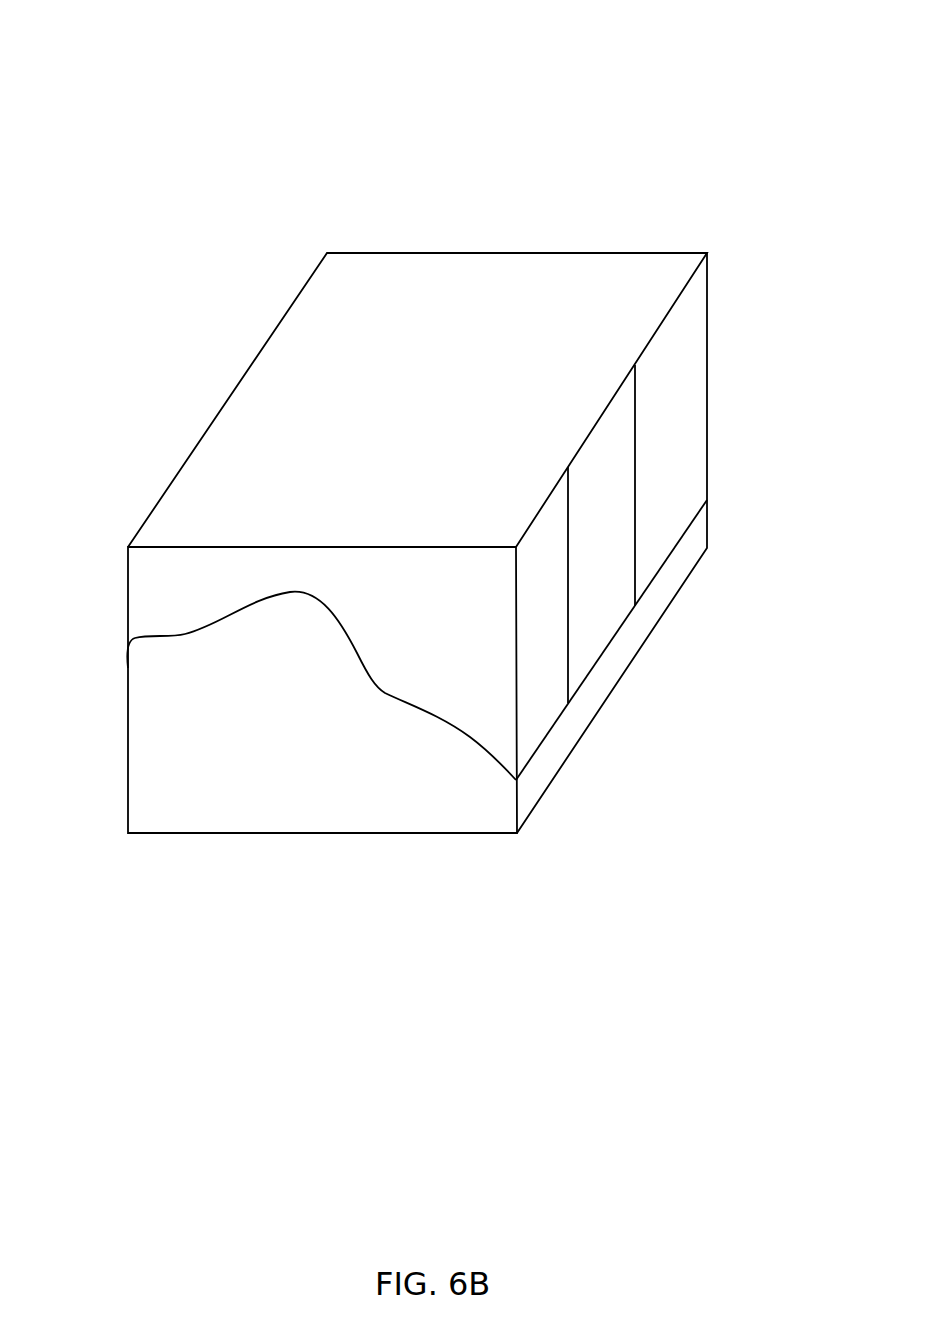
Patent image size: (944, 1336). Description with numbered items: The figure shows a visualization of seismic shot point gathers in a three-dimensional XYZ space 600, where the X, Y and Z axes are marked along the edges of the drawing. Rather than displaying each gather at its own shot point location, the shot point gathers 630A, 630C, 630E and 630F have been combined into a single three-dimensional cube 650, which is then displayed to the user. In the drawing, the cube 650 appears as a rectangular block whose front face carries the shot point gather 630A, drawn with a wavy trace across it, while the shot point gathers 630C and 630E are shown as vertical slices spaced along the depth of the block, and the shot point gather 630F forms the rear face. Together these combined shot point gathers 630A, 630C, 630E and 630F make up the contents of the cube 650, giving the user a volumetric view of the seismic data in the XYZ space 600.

The 3-D XYZ space 600 is at (105, 47).
The 3-D cube 650 is at (327, 252).
The shot point gather 630A is at (300, 749).
The shot point gather 630C is at (568, 490).
The shot point gather 630E is at (635, 410).
The shot point gather 630F is at (707, 279).